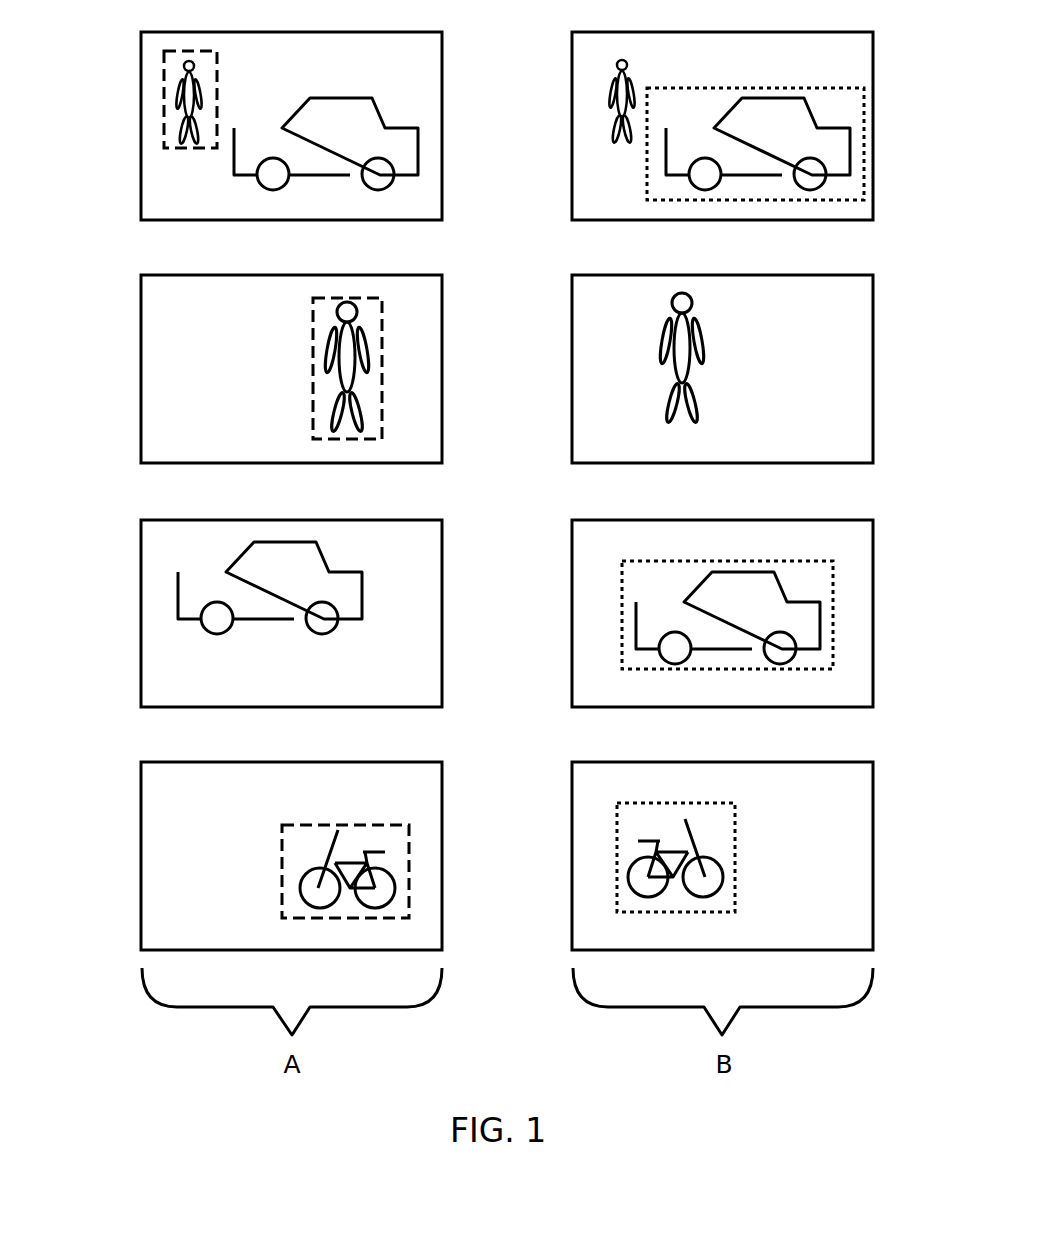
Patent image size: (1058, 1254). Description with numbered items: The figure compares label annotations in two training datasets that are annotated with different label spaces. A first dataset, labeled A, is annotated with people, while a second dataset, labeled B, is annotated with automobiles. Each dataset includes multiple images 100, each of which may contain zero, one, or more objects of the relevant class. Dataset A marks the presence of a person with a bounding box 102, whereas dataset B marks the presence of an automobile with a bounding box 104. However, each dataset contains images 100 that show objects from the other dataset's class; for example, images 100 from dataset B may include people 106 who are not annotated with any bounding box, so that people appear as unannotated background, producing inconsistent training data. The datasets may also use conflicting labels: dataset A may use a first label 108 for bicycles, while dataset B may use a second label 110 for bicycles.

The image 100 is at (202, 212).
The bounding box 102 is at (163, 110).
The bounding box 104 is at (833, 625).
The people 106 is at (614, 104).
The first label 108 is at (282, 880).
The second label 110 is at (733, 857).